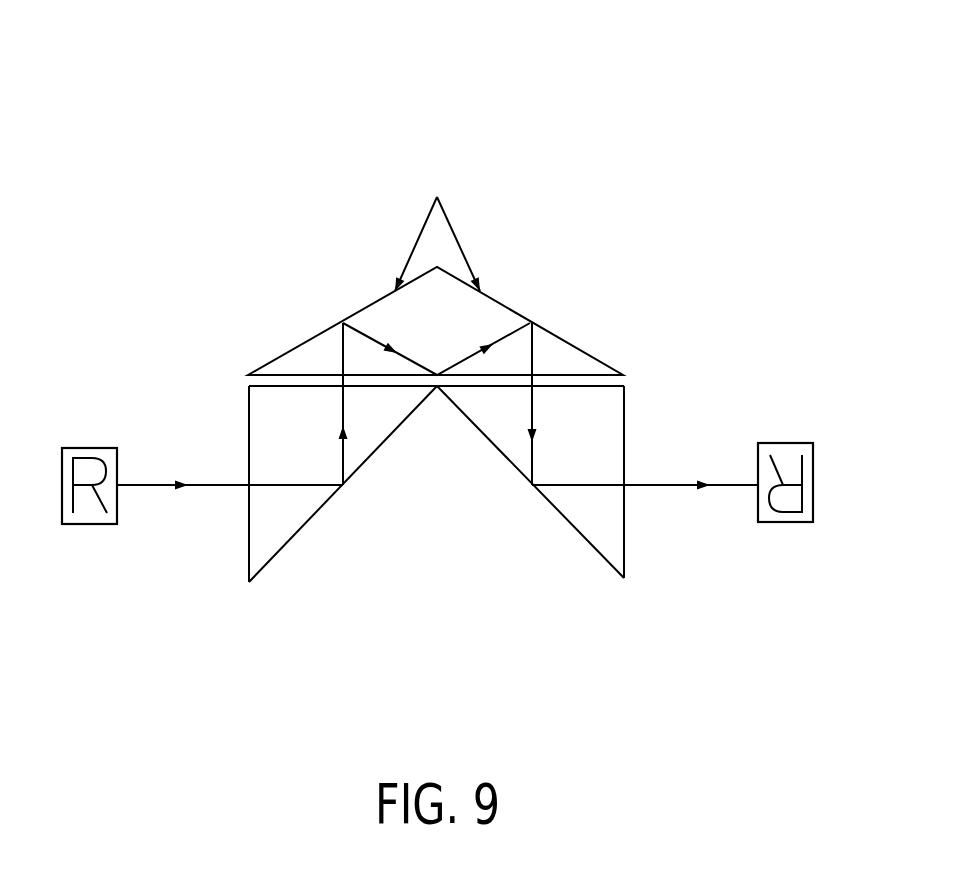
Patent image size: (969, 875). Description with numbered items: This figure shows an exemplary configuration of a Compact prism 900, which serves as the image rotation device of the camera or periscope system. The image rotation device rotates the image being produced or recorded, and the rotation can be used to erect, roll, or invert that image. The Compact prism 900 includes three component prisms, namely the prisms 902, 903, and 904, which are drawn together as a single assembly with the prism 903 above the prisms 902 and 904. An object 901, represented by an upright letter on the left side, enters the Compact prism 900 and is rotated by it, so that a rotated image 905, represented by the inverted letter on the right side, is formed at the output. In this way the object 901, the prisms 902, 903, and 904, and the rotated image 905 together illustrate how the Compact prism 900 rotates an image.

The Compact prism 900 is at (700, 88).
The object 901 is at (90, 524).
The prism 902 is at (249, 582).
The prism 903 is at (560, 336).
The prism 904 is at (624, 578).
The rotated image 905 is at (785, 522).